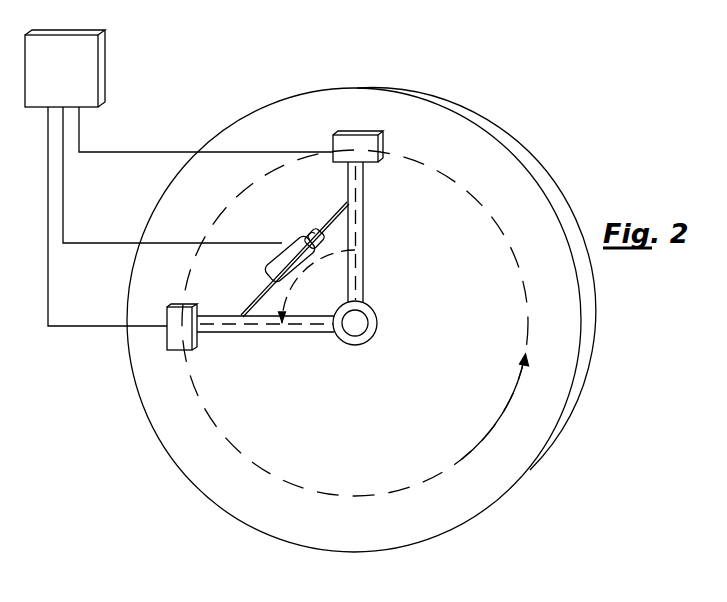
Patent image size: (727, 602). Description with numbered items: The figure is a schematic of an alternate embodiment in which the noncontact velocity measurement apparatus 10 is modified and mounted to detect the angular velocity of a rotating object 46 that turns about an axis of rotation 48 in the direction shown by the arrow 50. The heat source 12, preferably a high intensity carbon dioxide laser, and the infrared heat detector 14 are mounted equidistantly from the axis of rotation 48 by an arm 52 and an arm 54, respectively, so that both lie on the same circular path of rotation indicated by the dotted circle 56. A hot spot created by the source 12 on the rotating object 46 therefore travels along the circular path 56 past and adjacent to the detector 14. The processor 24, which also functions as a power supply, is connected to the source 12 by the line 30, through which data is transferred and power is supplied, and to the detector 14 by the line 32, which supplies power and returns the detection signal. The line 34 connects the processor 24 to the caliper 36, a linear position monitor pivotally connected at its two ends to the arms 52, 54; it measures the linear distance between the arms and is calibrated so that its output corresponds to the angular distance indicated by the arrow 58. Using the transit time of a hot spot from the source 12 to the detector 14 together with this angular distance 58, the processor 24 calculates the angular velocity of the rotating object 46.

The noncontact velocity measurement apparatus 10 is at (249, 86).
The heat source 12 is at (358, 134).
The heat detector 14 is at (182, 343).
The processor 24 is at (73, 63).
The line 30 is at (105, 152).
The line 32 is at (70, 325).
The line 34 is at (64, 195).
The caliper 36 is at (301, 245).
The rotating object 46 is at (448, 142).
The axis of rotation 48 is at (356, 323).
The arrow 50 is at (498, 425).
The arm 52 is at (357, 224).
The arm 54 is at (243, 330).
The circular path 56 is at (481, 202).
The arrow 58 is at (297, 277).